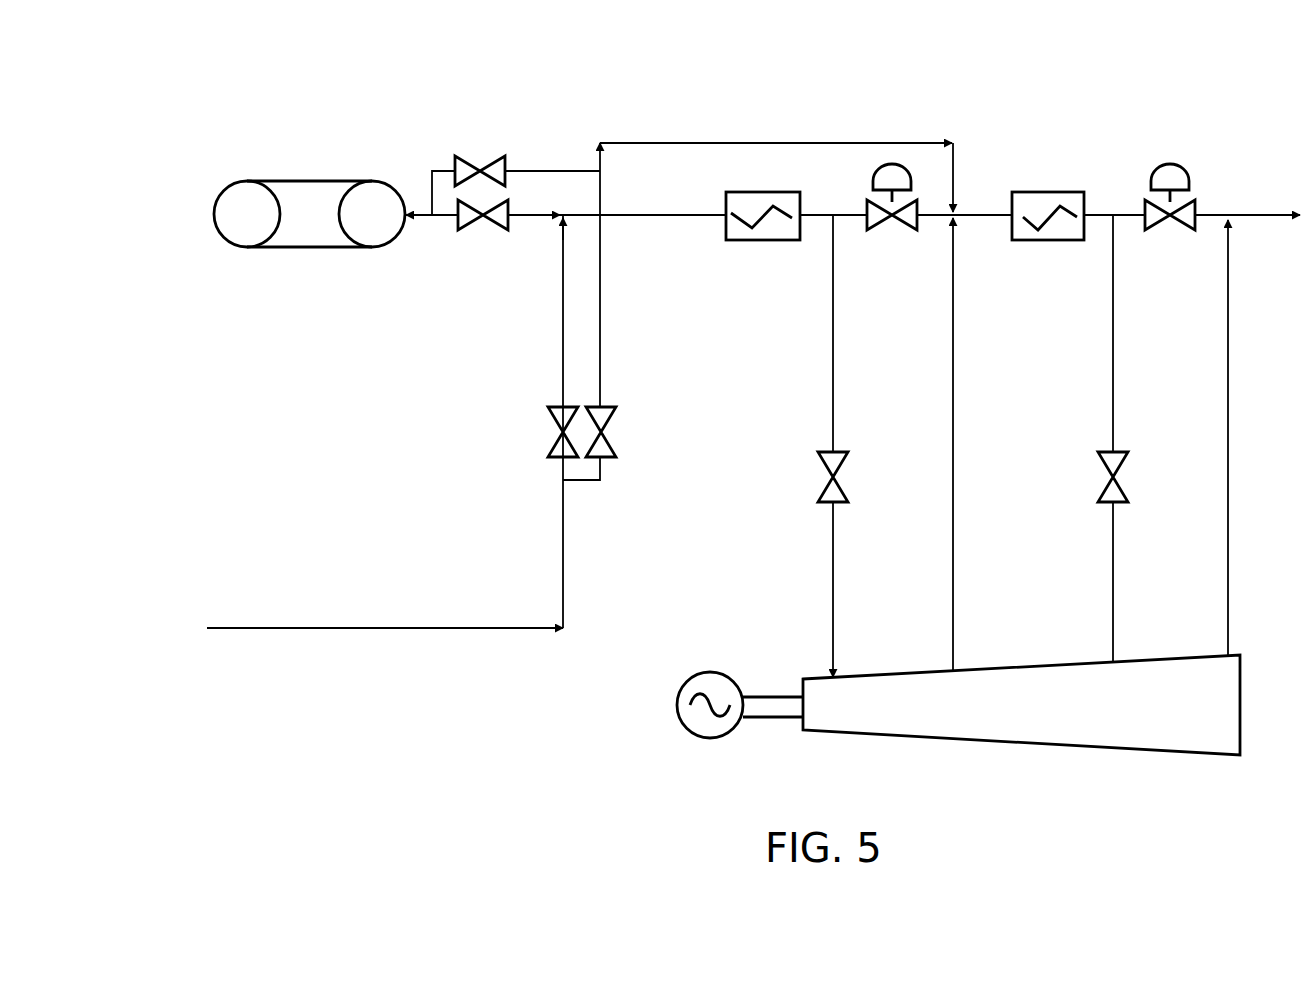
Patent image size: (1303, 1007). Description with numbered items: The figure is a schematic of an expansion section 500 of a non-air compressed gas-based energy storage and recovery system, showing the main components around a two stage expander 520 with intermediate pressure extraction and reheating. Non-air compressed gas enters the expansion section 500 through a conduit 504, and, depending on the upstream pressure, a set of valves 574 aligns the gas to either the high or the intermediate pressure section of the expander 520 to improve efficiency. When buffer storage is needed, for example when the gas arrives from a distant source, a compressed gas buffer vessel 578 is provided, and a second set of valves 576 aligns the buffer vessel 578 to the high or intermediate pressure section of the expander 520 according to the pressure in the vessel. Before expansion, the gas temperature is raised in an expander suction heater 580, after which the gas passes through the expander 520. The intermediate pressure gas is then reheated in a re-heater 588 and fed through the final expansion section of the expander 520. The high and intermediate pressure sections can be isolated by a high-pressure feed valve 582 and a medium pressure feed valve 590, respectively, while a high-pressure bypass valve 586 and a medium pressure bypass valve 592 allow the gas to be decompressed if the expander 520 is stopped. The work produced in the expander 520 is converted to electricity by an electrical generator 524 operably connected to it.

The expansion section 500 is at (446, 98).
The conduit 504 is at (563, 550).
The expander 520 is at (930, 741).
The electrical generator 524 is at (706, 739).
The set of valves 574 is at (597, 407).
The set of valves 576 is at (458, 208).
The compressed gas buffer vessel 578 is at (306, 250).
The expander suction heater 580 is at (758, 241).
The high-pressure feed valve 582 is at (820, 490).
The high-pressure bypass valve 586 is at (898, 235).
The re-heater 588 is at (1045, 241).
The medium pressure feed valve 590 is at (1100, 490).
The medium pressure bypass valve 592 is at (1178, 232).